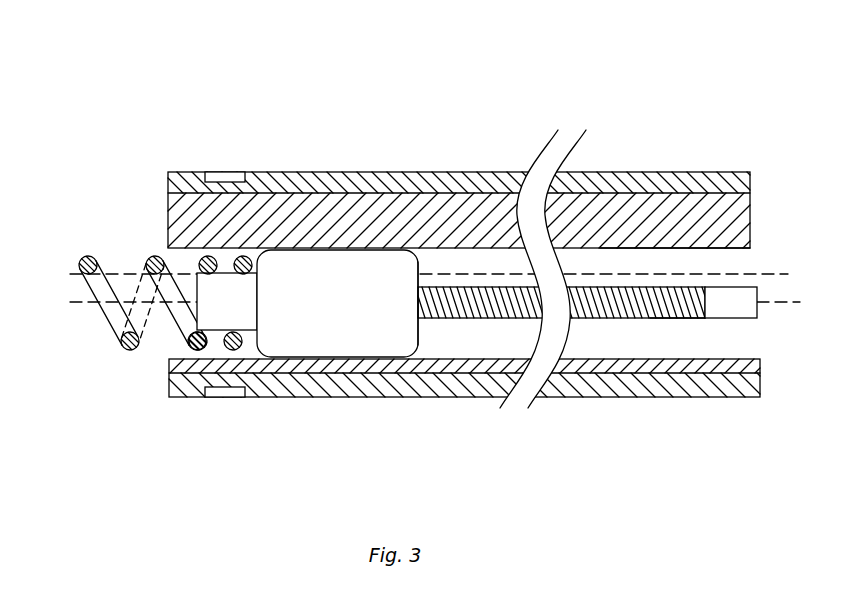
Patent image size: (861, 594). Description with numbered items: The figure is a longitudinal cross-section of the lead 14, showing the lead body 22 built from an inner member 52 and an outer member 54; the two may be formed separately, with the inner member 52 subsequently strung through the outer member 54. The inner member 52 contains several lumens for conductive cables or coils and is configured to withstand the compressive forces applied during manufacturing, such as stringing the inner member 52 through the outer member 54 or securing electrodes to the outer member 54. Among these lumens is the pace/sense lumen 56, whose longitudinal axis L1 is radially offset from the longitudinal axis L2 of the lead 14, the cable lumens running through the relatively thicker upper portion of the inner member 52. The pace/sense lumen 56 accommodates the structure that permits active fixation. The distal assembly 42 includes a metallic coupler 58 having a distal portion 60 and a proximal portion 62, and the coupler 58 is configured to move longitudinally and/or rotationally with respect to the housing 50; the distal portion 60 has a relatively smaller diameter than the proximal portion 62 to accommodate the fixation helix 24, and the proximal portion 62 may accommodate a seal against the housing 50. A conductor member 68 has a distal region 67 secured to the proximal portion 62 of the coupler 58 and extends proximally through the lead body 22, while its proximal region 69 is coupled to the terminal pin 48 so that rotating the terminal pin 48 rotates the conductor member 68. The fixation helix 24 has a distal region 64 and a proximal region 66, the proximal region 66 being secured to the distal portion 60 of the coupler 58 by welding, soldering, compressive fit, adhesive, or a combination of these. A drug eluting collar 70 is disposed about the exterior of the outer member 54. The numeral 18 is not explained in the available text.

The lead 14 is at (435, 100).
The second housing member 18 is at (688, 157).
The lead body 22 is at (313, 123).
The fixation helix 24 is at (148, 322).
The distal assembly 42 is at (317, 440).
The terminal pin 48 is at (740, 312).
The housing 50 is at (370, 376).
The inner member 52 is at (150, 207).
The outer member 54 is at (500, 173).
The pace/sense lumen 56 is at (747, 260).
The coupler 58 is at (313, 328).
The distal portion 60 is at (223, 320).
The proximal portion 62 is at (422, 338).
The distal region 64 is at (82, 263).
The proximal region 66 is at (240, 257).
The distal region 67 is at (435, 320).
The conductor member 68 is at (492, 320).
The proximal region 69 is at (692, 318).
The drug eluting collar 70 is at (222, 172).
The longitudinal axis L1 is at (780, 303).
The longitudinal axis L2 is at (790, 275).